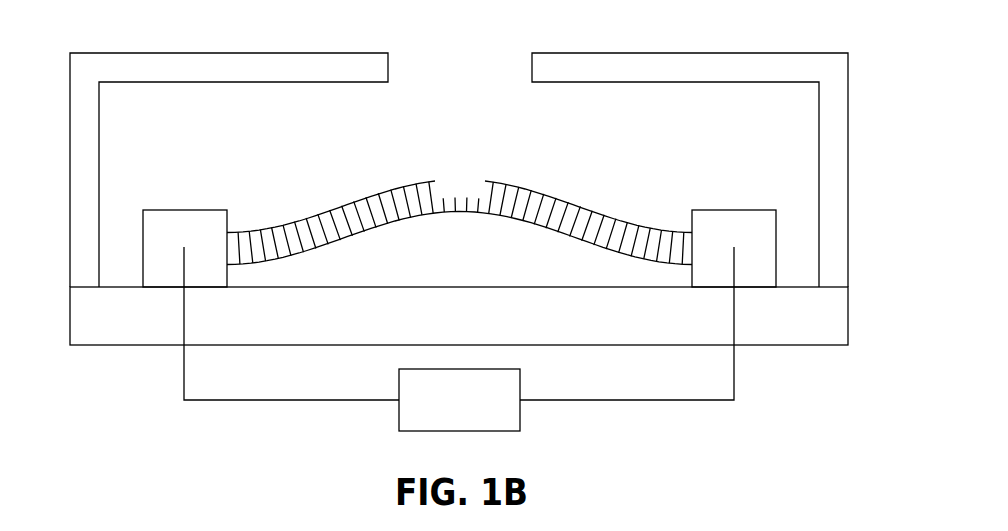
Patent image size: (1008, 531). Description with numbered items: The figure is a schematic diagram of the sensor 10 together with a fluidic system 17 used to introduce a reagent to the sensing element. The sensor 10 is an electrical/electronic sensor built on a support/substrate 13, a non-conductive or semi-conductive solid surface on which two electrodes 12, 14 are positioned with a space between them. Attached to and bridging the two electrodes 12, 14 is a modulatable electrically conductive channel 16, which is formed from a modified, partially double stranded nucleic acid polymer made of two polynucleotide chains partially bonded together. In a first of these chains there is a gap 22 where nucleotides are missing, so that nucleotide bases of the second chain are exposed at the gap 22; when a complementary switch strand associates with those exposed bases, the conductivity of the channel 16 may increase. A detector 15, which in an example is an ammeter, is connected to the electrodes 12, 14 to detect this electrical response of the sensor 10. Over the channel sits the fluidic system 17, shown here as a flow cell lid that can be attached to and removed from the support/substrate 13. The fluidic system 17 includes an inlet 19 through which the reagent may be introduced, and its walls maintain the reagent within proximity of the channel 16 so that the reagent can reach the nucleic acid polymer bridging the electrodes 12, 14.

The sensor 10 is at (172, 173).
The electrode 12 is at (206, 232).
The support/substrate 13 is at (816, 316).
The electrode 14 is at (752, 232).
The detector 15 is at (503, 415).
The modulatable electrically conductive channel 16 is at (607, 181).
The fluidic system 17 is at (681, 68).
The inlet 19 is at (388, 68).
The gap 22 is at (461, 181).